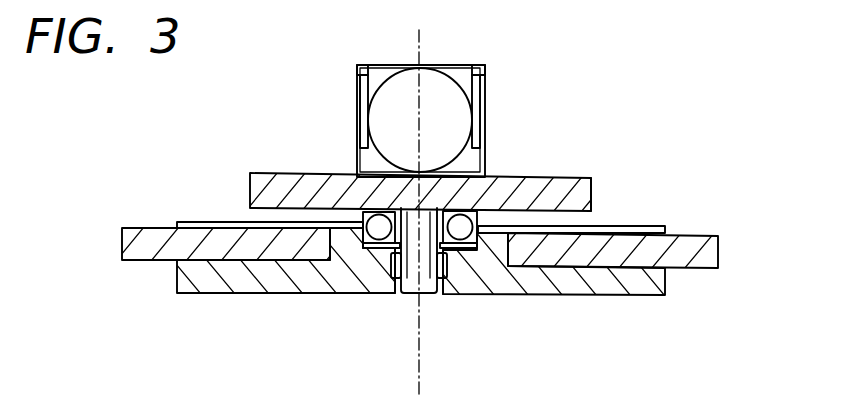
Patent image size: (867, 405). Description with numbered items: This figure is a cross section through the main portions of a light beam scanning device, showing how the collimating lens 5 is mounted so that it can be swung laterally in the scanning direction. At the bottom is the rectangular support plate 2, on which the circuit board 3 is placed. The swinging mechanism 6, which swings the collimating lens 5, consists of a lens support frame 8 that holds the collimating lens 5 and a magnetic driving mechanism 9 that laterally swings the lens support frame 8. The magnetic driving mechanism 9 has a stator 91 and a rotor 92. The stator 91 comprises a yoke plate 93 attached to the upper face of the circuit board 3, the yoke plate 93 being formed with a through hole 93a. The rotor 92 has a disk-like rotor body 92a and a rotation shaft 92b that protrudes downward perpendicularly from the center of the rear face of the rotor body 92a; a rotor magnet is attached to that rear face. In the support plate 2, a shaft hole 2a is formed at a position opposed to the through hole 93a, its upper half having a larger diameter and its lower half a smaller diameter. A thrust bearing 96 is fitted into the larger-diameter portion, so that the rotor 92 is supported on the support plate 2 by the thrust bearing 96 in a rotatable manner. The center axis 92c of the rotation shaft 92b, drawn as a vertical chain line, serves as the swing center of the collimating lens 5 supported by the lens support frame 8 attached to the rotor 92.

The support plate 2 is at (200, 283).
The shaft hole 2a is at (413, 295).
The circuit board 3 is at (153, 235).
The collimating lens 5 is at (382, 122).
The swinging mechanism 6 is at (457, 91).
The lens support frame 8 is at (487, 98).
The magnetic driving mechanism 9 is at (459, 212).
The stator 91 is at (693, 225).
The rotor 92 is at (577, 175).
The rotor body 92a is at (593, 178).
The rotation shaft 92b is at (430, 295).
The center axis 92c is at (421, 377).
The yoke plate 93 is at (648, 225).
The through hole 93a is at (363, 221).
The thrust bearing 96 is at (477, 218).